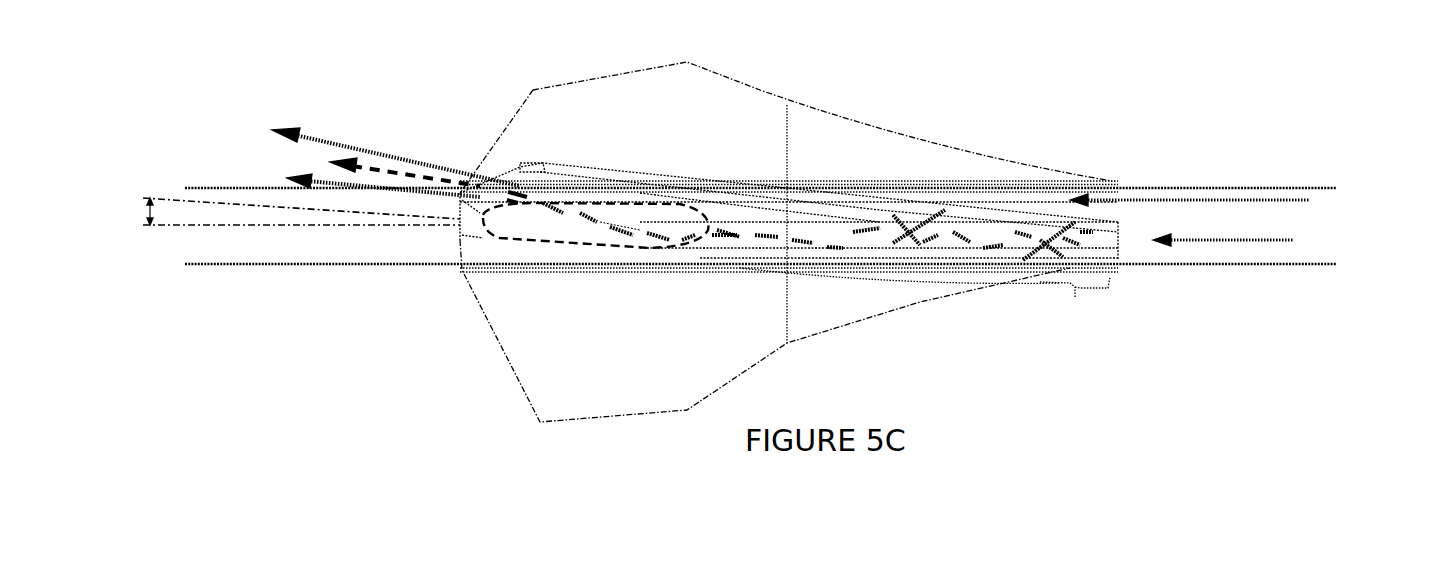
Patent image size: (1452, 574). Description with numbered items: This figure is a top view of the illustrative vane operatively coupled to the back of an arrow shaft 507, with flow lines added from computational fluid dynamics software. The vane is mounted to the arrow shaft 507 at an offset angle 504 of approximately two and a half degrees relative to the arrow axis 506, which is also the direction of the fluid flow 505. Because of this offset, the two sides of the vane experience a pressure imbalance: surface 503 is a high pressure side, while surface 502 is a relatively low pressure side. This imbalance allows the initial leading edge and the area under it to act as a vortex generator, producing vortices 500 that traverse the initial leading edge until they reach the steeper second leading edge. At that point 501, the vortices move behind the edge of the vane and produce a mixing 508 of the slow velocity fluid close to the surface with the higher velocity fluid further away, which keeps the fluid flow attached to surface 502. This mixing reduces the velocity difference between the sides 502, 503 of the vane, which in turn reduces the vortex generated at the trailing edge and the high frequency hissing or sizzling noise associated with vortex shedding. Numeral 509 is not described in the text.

The vortices 500 is at (789, 242).
The point where vortices move behind the second leading edge 501 is at (690, 218).
The low pressure surface 502 is at (583, 193).
The high pressure surface 503 is at (540, 188).
The offset angle 504 is at (261, 213).
The fluid flow 505 is at (834, 188).
The arrow axis 506 is at (222, 228).
The arrow shaft 507 is at (1160, 263).
The mixing of slow and high velocity fluid 508 is at (530, 237).
The vane base 509 is at (623, 232).